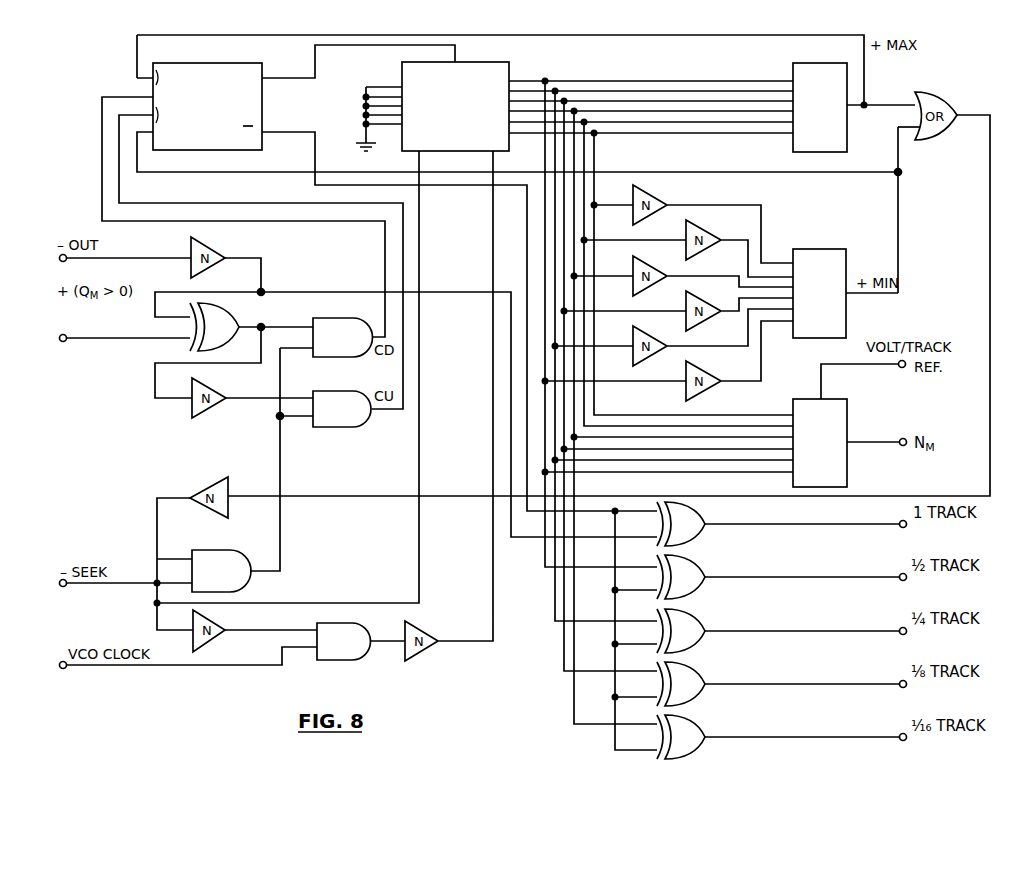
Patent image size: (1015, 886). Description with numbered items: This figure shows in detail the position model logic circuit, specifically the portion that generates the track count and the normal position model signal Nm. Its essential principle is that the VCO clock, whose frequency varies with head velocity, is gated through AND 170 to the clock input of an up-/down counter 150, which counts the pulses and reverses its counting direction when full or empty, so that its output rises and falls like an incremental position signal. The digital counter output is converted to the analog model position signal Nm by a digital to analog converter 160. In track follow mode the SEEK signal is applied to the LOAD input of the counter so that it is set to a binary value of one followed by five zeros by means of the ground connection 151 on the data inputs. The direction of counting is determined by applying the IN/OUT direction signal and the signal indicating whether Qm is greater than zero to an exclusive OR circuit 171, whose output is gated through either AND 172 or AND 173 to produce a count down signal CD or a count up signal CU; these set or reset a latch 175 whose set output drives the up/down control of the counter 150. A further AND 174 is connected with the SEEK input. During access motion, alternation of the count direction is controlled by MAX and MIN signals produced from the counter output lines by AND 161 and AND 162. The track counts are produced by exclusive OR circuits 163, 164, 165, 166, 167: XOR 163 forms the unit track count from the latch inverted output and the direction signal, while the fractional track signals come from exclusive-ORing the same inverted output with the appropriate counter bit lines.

The up-/down counter 150 is at (490, 62).
The ground connection 151 is at (365, 87).
The digital to analog converter 160 is at (847, 410).
The AND (MAX detector) 161 is at (793, 63).
The AND (MIN detector) 162 is at (838, 230).
The exclusive OR circuit 163 is at (700, 506).
The exclusive OR circuit 164 is at (700, 559).
The exclusive OR circuit 165 is at (700, 613).
The exclusive OR circuit 166 is at (700, 666).
The exclusive OR circuit 167 is at (700, 719).
The AND 170 is at (345, 623).
The exclusive OR circuit 171 is at (227, 306).
The AND 172 is at (325, 318).
The AND 173 is at (325, 391).
The AND 174 is at (229, 550).
The latch 175 is at (258, 64).